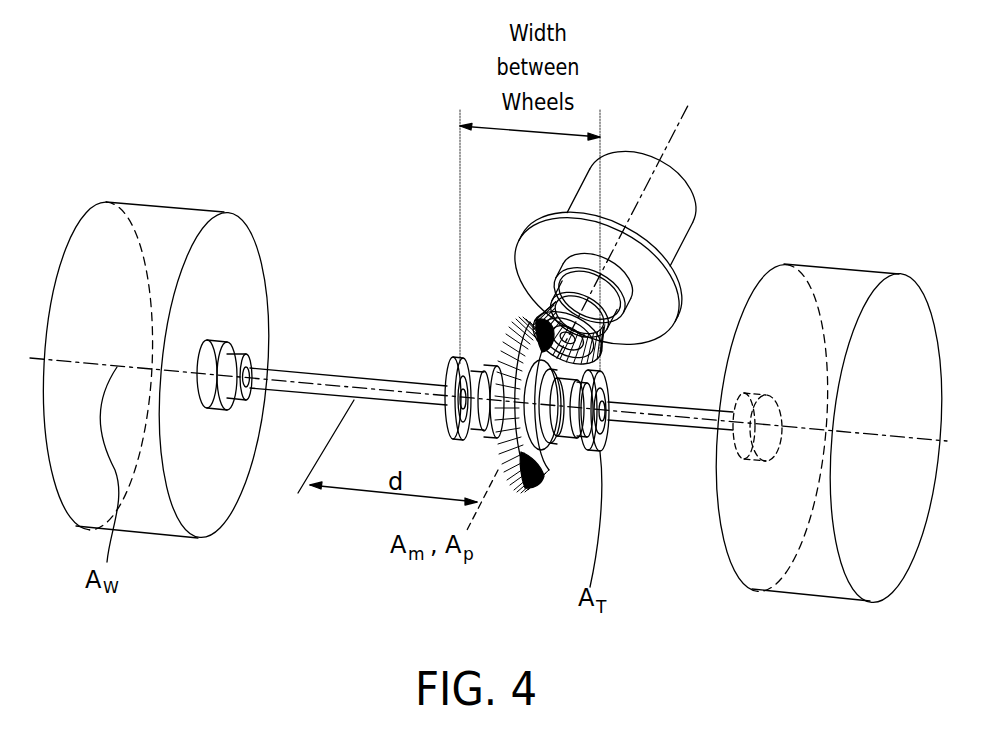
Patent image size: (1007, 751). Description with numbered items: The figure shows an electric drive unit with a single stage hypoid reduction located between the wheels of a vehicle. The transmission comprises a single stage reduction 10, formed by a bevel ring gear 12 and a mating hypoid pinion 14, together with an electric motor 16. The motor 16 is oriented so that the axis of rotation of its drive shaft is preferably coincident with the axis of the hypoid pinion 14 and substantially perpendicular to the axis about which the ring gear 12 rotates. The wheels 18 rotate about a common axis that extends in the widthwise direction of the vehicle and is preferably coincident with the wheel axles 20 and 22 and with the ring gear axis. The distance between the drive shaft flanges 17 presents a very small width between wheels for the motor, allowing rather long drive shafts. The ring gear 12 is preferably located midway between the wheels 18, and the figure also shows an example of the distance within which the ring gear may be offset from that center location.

The single stage reduction 10 is at (514, 312).
The bevel ring gear 12 is at (527, 491).
The hypoid pinion 14 is at (606, 362).
The electric motor 16 is at (695, 187).
The drive shaft flanges 17 is at (447, 375).
The wheels 18 is at (150, 201).
The wheel axle 20 is at (293, 369).
The wheel axle 22 is at (671, 430).